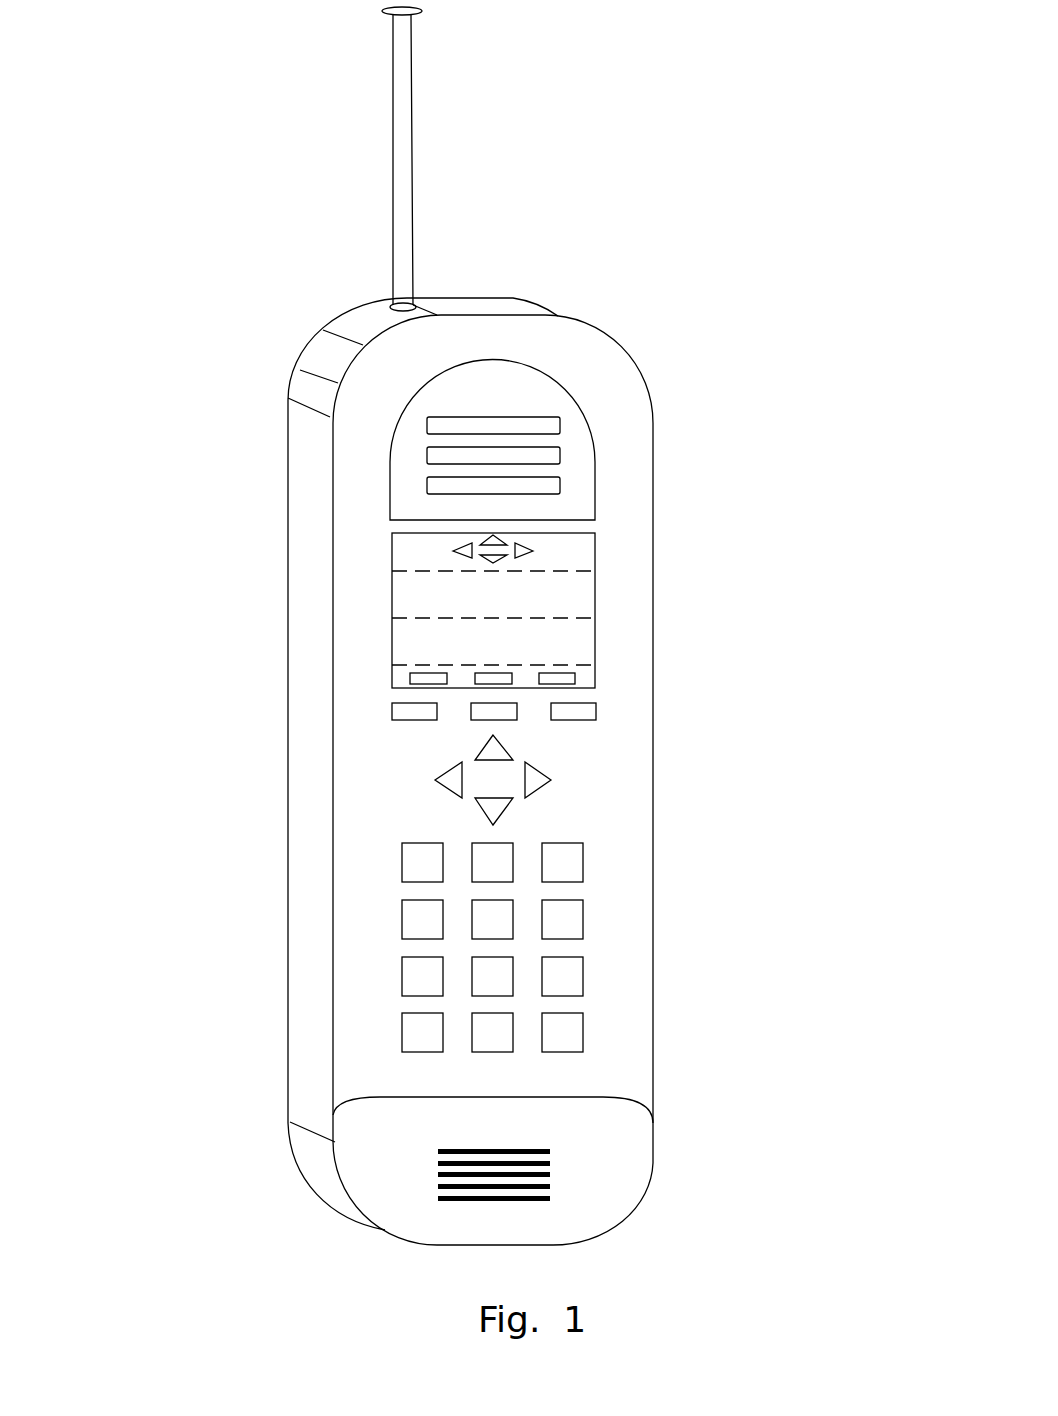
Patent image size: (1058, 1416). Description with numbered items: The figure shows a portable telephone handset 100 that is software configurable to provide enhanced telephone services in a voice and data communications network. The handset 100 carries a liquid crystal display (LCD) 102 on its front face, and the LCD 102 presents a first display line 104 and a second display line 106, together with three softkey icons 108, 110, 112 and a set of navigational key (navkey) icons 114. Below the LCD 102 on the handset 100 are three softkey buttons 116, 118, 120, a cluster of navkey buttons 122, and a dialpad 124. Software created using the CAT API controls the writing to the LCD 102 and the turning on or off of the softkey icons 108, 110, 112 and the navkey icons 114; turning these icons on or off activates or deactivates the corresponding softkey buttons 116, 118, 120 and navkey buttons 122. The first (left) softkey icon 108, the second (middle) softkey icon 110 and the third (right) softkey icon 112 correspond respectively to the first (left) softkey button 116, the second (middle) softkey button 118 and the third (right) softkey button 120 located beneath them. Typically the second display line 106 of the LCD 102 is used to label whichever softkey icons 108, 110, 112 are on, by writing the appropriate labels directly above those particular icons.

The portable telephone handset 100 is at (543, 193).
The liquid crystal display 102 is at (358, 560).
The first display line 104 is at (588, 588).
The second display line 106 is at (588, 642).
The first softkey icon 108 is at (408, 680).
The second softkey icon 110 is at (475, 678).
The third softkey icon 112 is at (577, 677).
The navigational key icons 114 is at (553, 545).
The first softkey button 116 is at (398, 720).
The second softkey button 118 is at (477, 720).
The third softkey button 120 is at (597, 708).
The navkey buttons 122 is at (527, 748).
The dialpad 124 is at (593, 886).